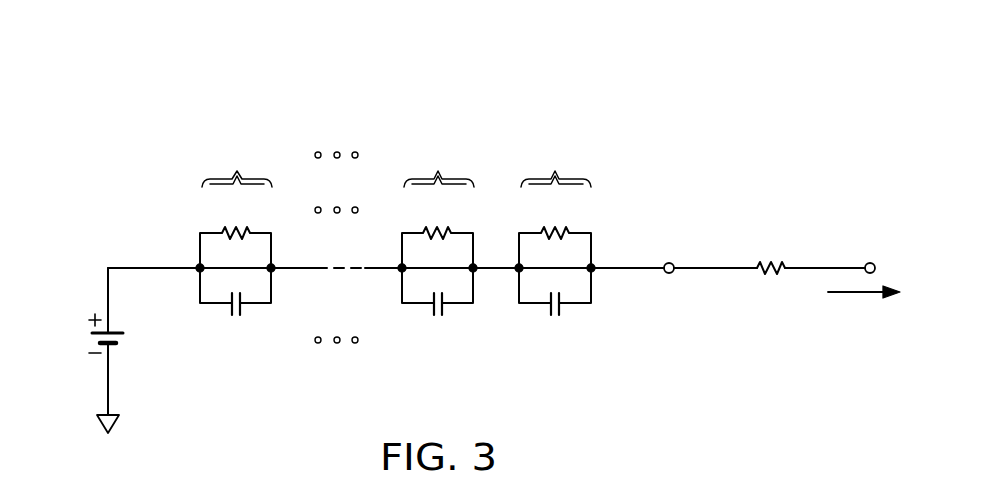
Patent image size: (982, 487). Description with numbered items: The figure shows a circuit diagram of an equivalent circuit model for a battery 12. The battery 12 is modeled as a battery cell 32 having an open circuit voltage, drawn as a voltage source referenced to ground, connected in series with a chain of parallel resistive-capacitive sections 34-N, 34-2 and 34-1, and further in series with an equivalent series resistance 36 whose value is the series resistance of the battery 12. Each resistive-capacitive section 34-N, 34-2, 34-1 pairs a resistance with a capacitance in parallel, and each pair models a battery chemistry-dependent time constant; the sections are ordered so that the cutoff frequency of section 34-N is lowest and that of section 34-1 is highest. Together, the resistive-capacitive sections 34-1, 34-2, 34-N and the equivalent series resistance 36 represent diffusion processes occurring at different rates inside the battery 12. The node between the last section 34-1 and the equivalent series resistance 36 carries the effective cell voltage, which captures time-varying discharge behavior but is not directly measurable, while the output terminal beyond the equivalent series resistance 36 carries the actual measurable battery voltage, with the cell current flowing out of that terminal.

The battery 12 is at (282, 74).
The battery cell 32 is at (85, 340).
The parallel resistive-capacitive section 34-N is at (272, 358).
The parallel resistive-capacitive section 34-2 is at (474, 358).
The parallel resistive-capacitive section 34-1 is at (591, 358).
The equivalent series resistance 36 is at (772, 277).